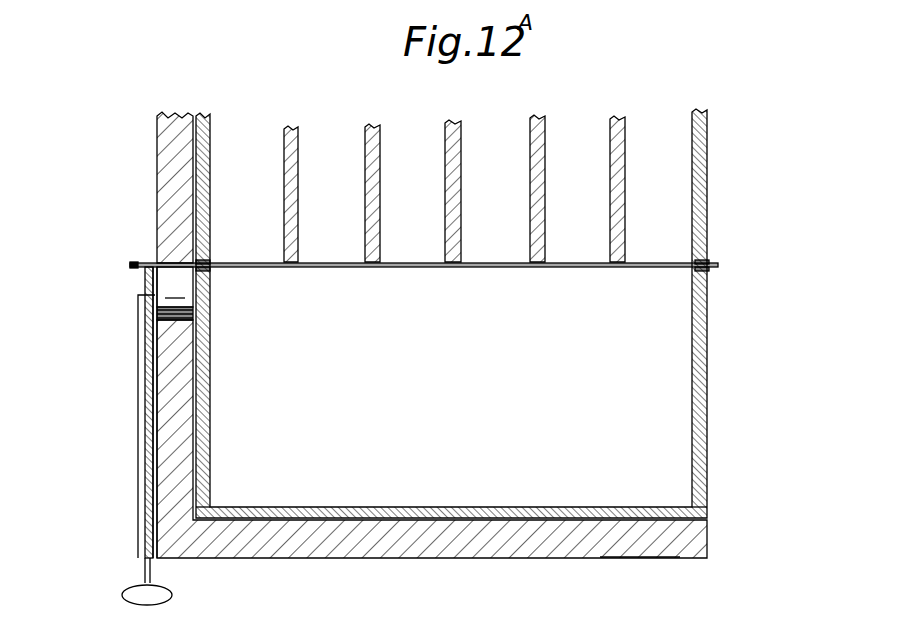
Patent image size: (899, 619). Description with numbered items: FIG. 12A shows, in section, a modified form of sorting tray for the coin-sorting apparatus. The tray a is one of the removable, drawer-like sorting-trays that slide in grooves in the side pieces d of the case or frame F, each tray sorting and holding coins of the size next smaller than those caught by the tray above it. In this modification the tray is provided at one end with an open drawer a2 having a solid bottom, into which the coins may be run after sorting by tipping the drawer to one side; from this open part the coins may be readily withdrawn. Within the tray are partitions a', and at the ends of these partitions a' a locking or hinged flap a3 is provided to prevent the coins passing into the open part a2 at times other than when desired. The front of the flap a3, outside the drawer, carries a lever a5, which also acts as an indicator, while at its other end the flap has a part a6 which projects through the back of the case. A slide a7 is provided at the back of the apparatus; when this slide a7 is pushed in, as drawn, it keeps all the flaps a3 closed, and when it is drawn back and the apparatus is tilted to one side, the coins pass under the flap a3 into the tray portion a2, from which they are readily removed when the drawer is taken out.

The case or frame F is at (430, 335).
The sorting-tray a is at (431, 303).
The partitions a' is at (476, 188).
The open drawer a2 is at (462, 390).
The locking or hinged flap a3 is at (305, 268).
The lever a5 is at (716, 266).
The projecting part a6 is at (133, 264).
The slide a7 is at (145, 437).
The side pieces d is at (668, 558).